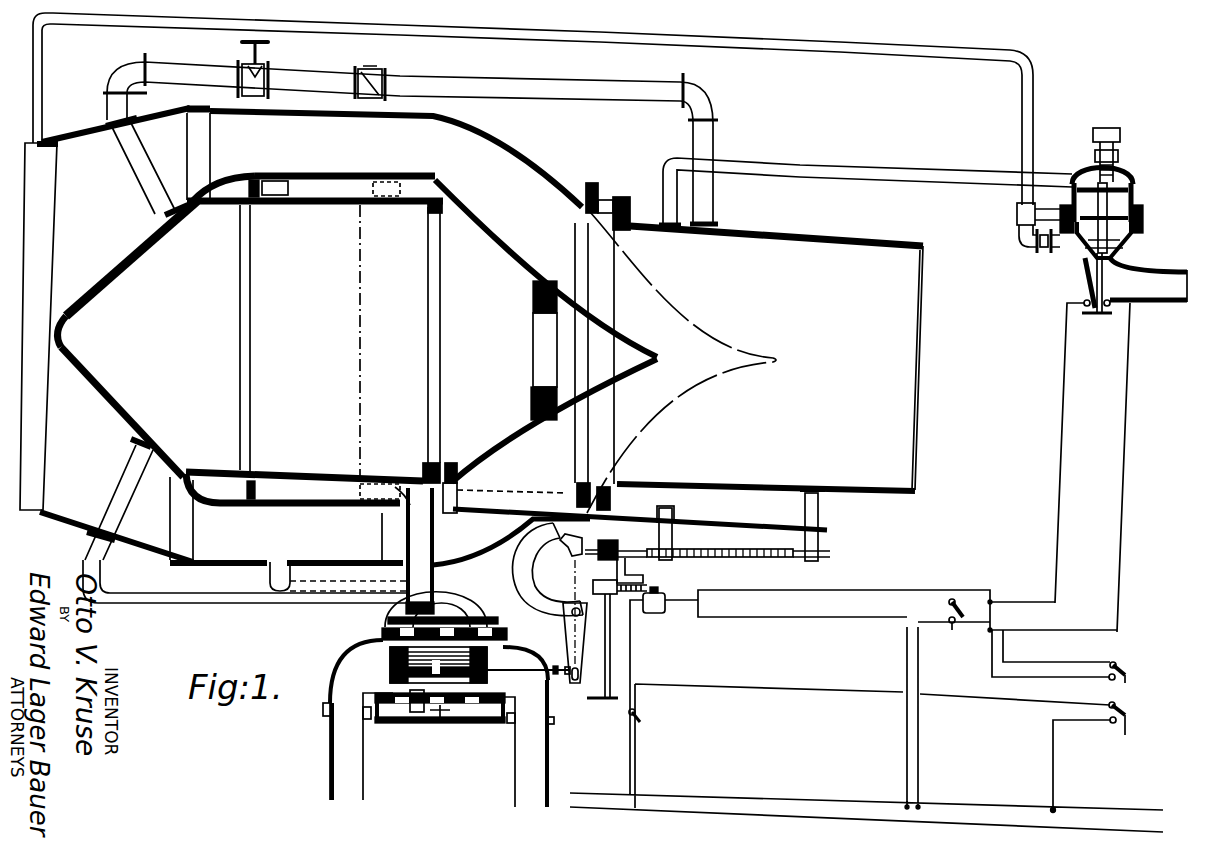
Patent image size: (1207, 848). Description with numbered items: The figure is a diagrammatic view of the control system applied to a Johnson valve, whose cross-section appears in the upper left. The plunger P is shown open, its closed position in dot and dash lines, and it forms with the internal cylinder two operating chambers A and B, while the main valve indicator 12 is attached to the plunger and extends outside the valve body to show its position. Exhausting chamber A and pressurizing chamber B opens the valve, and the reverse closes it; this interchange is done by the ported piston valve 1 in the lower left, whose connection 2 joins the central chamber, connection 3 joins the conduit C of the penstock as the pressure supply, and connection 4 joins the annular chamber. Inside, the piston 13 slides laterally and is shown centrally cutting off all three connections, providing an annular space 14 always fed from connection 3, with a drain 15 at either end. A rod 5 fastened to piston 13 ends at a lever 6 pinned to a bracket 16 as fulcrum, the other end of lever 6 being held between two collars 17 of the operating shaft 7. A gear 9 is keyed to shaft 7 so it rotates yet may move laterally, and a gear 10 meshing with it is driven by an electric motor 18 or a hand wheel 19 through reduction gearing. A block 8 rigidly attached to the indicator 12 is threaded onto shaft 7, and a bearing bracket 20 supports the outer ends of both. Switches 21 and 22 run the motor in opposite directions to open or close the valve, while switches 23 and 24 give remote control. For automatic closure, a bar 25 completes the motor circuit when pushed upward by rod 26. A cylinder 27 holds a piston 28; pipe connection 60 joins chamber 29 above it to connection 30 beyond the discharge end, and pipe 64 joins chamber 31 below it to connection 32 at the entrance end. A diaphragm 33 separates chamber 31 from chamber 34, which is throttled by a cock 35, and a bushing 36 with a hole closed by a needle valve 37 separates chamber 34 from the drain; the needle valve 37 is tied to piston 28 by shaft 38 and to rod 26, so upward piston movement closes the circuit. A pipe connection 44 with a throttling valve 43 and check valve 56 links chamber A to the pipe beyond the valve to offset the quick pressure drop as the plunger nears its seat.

The ported piston valve 1 is at (437, 714).
The connection 2 is at (217, 594).
The connection 3 is at (330, 593).
The connection 4 is at (433, 598).
The rod 5 is at (537, 676).
The lever 6 is at (568, 635).
The operating shaft 7 is at (741, 556).
The block 8 is at (674, 536).
The gear 9 is at (622, 551).
The gear 10 is at (642, 568).
The main valve indicator 12 is at (722, 521).
The piston 13 is at (417, 683).
The annular space 14 is at (453, 692).
The drain 15 is at (350, 768).
The bracket 16 is at (547, 569).
The collars 17 is at (566, 542).
The electric motor 18 is at (659, 606).
The hand wheel 19 is at (606, 700).
The bearing bracket 20 is at (820, 540).
The switch 21 is at (642, 720).
The switch 22 is at (948, 608).
The switch 23 is at (1131, 680).
The switch 24 is at (1116, 731).
The bar 25 is at (1098, 318).
The rod 26 is at (1090, 281).
The cylinder 27 is at (1120, 175).
The piston 28 is at (1131, 190).
The chamber 29 is at (1085, 178).
The connection 30 is at (663, 223).
The chamber 31 is at (1122, 216).
The connection 32 is at (41, 140).
The diaphragm 33 is at (1136, 242).
The chamber 34 is at (1120, 249).
The cock 35 is at (1040, 243).
The bushing 36 is at (1082, 253).
The needle valve 37 is at (1106, 266).
The shaft 38 is at (1108, 220).
The throttling valve 43 is at (270, 71).
The pipe connection 44 is at (562, 90).
The check valve 56 is at (388, 68).
The pipe connection 60 is at (922, 172).
The pipe 64 is at (914, 50).
The operating chamber A is at (300, 340).
The operating chamber B is at (323, 341).
The conduit C is at (286, 520).
The plunger P is at (524, 266).